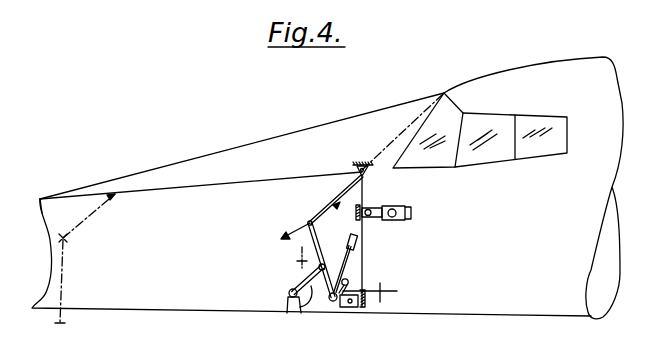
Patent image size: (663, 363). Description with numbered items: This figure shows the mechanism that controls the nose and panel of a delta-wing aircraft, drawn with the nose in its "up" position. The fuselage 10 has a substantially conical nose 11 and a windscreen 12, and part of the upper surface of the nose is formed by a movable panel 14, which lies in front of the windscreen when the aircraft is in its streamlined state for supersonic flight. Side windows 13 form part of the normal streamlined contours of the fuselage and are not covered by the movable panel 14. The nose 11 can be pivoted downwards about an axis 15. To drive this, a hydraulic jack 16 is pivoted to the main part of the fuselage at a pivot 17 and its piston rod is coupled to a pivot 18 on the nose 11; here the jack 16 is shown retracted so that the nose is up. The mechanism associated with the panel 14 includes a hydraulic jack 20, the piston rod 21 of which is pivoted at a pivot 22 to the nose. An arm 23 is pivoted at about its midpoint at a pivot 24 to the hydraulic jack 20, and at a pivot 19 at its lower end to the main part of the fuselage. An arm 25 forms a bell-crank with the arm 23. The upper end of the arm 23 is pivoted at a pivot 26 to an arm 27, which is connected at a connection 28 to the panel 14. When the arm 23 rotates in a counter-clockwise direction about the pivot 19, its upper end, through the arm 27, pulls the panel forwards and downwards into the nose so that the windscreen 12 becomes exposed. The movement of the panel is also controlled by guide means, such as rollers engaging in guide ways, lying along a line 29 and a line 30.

The fuselage 10 is at (468, 91).
The nose 11 is at (40, 199).
The windscreen 12 is at (432, 120).
The side windows 13 is at (477, 125).
The movable panel 14 is at (302, 135).
The axis 15 is at (383, 296).
The hydraulic jack 16 is at (411, 215).
The pivot 17 is at (393, 219).
The pivot 18 is at (359, 224).
The pivot 19 is at (332, 299).
The hydraulic jack 20 is at (378, 287).
The piston rod 21 is at (308, 301).
The pivot 22 is at (290, 300).
The arm 23 is at (330, 258).
The pivot 24 is at (318, 267).
The arm 25 is at (353, 303).
The pivot 26 is at (308, 222).
The arm 27 is at (338, 204).
The connection 28 is at (398, 145).
The line 29 is at (87, 221).
The line 30 is at (302, 247).